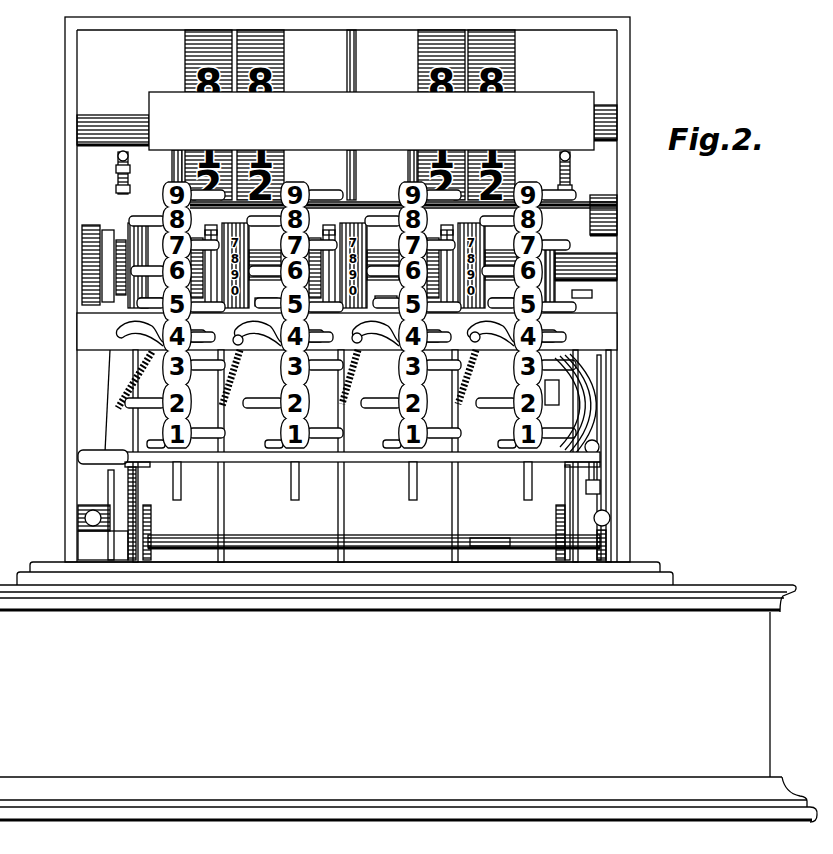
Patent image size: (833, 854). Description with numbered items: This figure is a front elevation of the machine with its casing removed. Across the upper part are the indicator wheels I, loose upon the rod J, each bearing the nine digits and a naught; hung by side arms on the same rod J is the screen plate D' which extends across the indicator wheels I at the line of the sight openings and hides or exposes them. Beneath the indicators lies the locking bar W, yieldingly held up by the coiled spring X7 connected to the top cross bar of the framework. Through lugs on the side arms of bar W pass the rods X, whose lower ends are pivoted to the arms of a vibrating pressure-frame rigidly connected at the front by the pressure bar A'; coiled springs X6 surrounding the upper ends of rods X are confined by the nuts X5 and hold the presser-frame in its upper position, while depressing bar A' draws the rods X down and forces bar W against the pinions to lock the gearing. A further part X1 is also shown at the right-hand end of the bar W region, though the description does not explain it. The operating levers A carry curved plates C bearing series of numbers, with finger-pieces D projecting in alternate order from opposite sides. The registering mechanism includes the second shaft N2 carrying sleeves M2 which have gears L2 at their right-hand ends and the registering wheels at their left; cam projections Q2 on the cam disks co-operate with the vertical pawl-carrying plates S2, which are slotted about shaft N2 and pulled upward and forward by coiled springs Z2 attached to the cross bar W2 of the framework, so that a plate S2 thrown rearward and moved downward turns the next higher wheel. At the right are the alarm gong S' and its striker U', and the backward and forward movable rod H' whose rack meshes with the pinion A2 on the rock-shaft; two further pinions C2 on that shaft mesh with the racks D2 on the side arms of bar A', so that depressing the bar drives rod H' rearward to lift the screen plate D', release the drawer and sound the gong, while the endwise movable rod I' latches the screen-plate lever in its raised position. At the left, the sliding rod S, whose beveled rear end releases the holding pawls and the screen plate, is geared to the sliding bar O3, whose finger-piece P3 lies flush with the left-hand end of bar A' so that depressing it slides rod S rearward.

The indicator wheel I is at (347, 119).
The coiled spring X7 is at (356, 62).
The rod J is at (110, 124).
The screen plate D' is at (371, 121).
The rod X is at (118, 160).
The nut X5 is at (129, 171).
The coiled spring X6 is at (118, 189).
The gear X1 is at (562, 176).
The locking bar W is at (382, 203).
The cam projection Q2 is at (128, 226).
The second shaft N2 is at (617, 268).
The gear L2 is at (576, 296).
The sleeve M2 is at (384, 297).
The finger-piece D is at (347, 331).
The curved plate C is at (374, 334).
The pawl-carrying plate S2 is at (108, 228).
The cross bar W2 is at (356, 333).
The coiled spring Z2 is at (134, 384).
The alarm gong S' is at (578, 456).
The striker U' is at (592, 458).
The pressure bar A' is at (362, 445).
The finger-piece P3 is at (96, 452).
The operating lever A is at (352, 481).
The sliding bar O3 is at (108, 483).
The sliding rod S is at (103, 525).
The rack D2 is at (151, 513).
The pinion C2 is at (162, 536).
The endwise movable rod I' is at (490, 525).
The movable rod H' is at (623, 513).
The pinion A2 is at (606, 540).